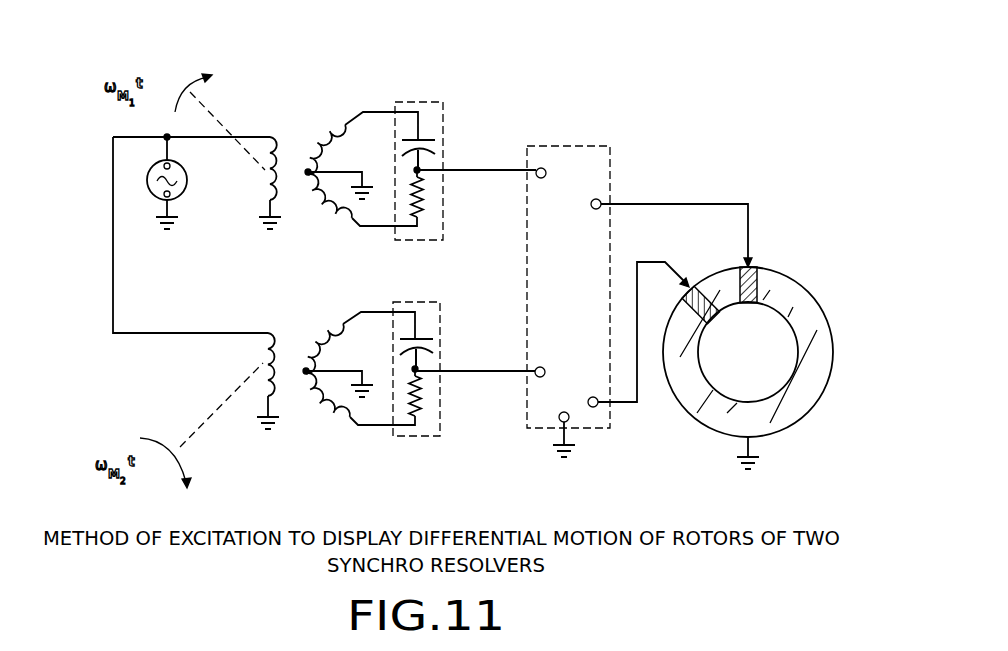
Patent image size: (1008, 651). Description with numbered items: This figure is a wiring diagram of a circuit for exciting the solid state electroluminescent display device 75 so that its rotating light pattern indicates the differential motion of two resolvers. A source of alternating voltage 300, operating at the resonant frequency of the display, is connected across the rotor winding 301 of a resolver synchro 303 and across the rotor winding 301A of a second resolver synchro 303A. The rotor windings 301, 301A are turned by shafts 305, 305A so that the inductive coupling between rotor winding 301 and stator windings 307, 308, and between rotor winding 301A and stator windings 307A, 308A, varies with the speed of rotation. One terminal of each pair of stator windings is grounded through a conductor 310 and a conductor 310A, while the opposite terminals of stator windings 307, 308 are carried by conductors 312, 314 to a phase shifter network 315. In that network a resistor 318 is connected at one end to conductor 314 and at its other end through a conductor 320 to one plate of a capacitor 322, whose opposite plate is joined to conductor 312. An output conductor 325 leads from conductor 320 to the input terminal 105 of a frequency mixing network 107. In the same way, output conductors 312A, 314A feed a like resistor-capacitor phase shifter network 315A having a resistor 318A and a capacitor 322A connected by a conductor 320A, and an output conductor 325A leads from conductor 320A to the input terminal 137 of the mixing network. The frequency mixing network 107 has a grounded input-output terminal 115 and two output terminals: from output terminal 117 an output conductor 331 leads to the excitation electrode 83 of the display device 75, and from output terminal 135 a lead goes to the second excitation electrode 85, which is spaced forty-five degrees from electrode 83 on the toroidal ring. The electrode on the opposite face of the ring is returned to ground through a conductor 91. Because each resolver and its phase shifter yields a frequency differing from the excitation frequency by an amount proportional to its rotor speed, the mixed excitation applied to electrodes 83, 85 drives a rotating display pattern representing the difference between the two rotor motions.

The source of alternating voltage 300 is at (192, 183).
The rotor winding 301 is at (266, 173).
The shaft 305 is at (223, 122).
The resolver synchro 303 is at (411, 163).
The stator winding 307 is at (339, 132).
The stator winding 308 is at (324, 212).
The conductor 310 is at (333, 165).
The conductor 312 is at (378, 86).
The conductor 314 is at (370, 230).
The phase shifter network 315 is at (420, 102).
The resistor 318 is at (431, 200).
The conductor 320 is at (434, 156).
The capacitor 322 is at (434, 147).
The output conductor 325 is at (456, 175).
The rotor winding 301A is at (262, 362).
The shaft 305A is at (205, 417).
The second resolver synchro 303A is at (405, 371).
The stator winding 307A is at (331, 330).
The stator winding 308A is at (322, 406).
The conductor 310A is at (317, 366).
The output conductor 312A is at (358, 311).
The output conductor 314A is at (368, 435).
The resistor-capacitor phase shifter network 315A is at (403, 303).
The resistor 318A is at (425, 397).
The conductor 320A is at (428, 358).
The capacitor 322A is at (432, 346).
The output conductor 325A is at (442, 376).
The frequency mixing network 107 is at (559, 144).
The input terminal 105 is at (547, 172).
The output terminal 117 is at (592, 209).
The input terminal 137 is at (539, 366).
The output terminal 135 is at (587, 400).
The grounded input-output terminal 115 is at (557, 415).
The output conductor 331 is at (696, 191).
The toroidal ring 75 is at (760, 357).
The electrode 83 is at (759, 276).
The electrode 85 is at (706, 292).
The conductor 91 is at (752, 454).